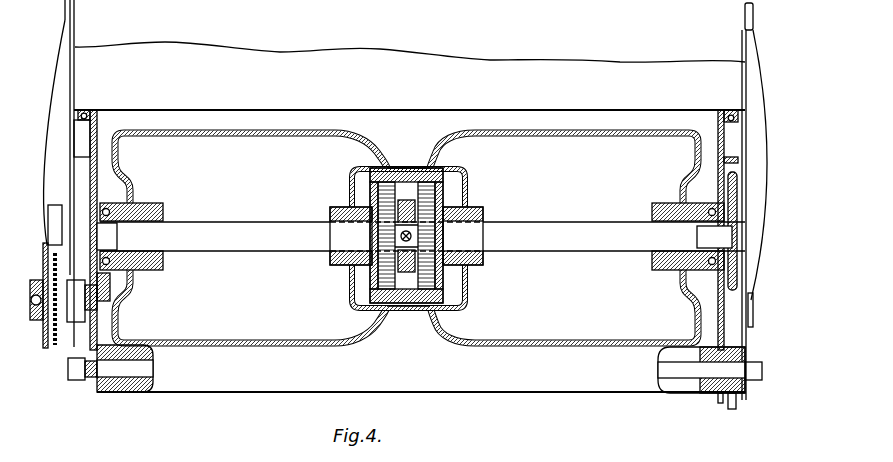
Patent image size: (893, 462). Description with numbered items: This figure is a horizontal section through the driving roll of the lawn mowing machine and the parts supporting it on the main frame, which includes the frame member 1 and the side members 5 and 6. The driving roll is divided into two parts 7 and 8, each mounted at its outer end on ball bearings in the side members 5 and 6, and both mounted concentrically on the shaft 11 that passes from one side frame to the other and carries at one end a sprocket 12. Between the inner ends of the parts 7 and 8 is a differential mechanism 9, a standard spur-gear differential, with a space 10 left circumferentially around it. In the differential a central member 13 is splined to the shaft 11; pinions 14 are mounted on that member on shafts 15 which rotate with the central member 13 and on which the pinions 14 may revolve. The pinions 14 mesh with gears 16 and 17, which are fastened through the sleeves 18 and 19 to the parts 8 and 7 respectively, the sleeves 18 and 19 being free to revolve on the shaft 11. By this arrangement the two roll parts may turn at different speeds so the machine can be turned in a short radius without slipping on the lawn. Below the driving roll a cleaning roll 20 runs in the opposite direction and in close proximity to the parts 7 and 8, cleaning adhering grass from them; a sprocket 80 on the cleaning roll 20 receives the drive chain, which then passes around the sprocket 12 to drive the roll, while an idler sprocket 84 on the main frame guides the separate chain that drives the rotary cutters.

The main frame member 1 is at (503, 62).
The side member 5 is at (718, 140).
The side member 6 is at (97, 130).
The driving roll part 7 is at (245, 130).
The driving roll part 8 is at (585, 130).
The differential mechanism 9 is at (407, 247).
The space 10 is at (410, 202).
The shaft 11 is at (552, 252).
The sprocket 12 is at (735, 192).
The central member 13 is at (397, 173).
The pinion 14 is at (365, 181).
The pinion shaft 15 is at (397, 167).
The gear 16 is at (443, 202).
The gear 17 is at (378, 232).
The sleeve 18 is at (480, 257).
The sleeve 19 is at (330, 215).
The cleaning roll 20 is at (267, 382).
The sprocket 80 is at (738, 397).
The idler sprocket 84 is at (55, 347).